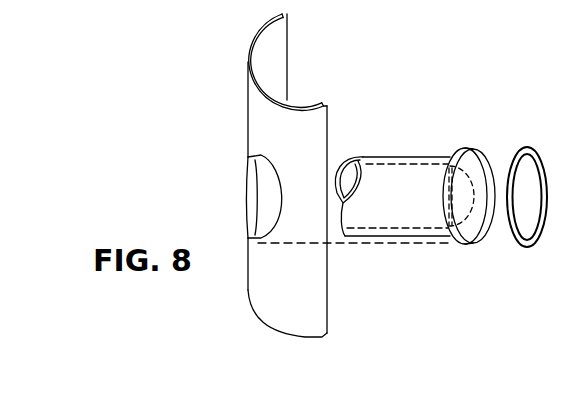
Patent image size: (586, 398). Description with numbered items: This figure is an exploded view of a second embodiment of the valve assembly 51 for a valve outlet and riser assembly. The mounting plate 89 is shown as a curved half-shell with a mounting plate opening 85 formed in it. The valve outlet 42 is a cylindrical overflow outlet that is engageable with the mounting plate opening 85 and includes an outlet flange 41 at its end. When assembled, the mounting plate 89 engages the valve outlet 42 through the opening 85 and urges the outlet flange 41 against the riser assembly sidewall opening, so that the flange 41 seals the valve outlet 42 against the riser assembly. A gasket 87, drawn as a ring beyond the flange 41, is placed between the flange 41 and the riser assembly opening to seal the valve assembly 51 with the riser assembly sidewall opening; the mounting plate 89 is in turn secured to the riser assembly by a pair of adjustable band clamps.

The valve assembly 51 is at (420, 72).
The mounting plate 89 is at (268, 56).
The mounting plate opening 85 is at (248, 175).
The valve outlet 42 is at (390, 183).
The outlet flange 41 is at (473, 152).
The gasket 87 is at (530, 158).